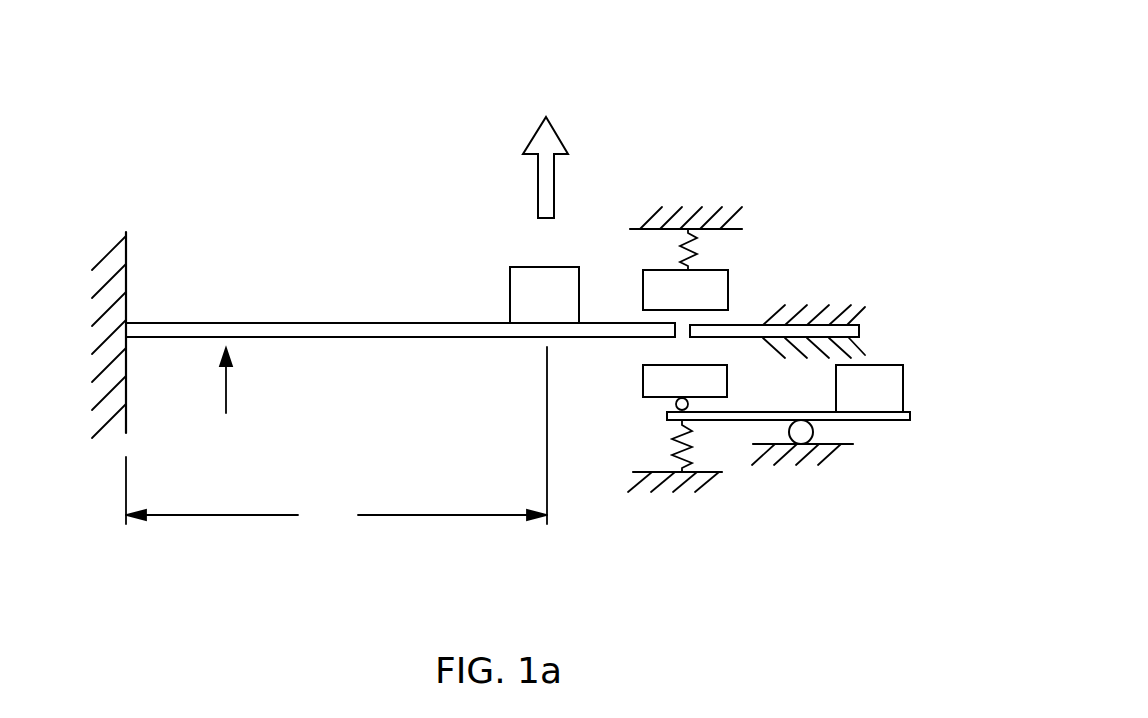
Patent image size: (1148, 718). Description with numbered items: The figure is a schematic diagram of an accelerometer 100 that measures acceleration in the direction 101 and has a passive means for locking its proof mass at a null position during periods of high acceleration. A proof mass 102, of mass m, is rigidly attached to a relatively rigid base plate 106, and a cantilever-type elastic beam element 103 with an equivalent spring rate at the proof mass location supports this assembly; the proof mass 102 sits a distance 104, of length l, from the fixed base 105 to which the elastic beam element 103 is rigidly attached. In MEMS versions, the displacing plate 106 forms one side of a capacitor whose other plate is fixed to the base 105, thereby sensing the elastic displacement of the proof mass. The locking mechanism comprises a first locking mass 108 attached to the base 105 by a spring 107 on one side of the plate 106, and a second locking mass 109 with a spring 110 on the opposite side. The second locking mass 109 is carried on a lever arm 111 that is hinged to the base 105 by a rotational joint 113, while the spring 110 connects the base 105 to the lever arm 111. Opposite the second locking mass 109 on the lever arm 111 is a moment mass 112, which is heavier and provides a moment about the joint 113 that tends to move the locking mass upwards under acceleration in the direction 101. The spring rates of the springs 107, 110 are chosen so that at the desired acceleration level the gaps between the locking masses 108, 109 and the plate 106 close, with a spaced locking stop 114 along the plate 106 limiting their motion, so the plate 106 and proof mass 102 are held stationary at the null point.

The accelerometer 100 is at (708, 103).
The direction of acceleration 101 is at (556, 135).
The proof mass 102 is at (496, 281).
The elastic beam element 103 is at (228, 397).
The distance 104 is at (336, 437).
The base 105 is at (128, 257).
The base plate 106 is at (530, 339).
The spring 107 is at (695, 245).
The first locking mass 108 is at (729, 298).
The second locking mass 109 is at (642, 378).
The spring 110 is at (675, 444).
The lever arm 111 is at (903, 421).
The moment mass 112 is at (835, 393).
The rotational joint 113 is at (814, 431).
The locking stop 114 is at (710, 339).